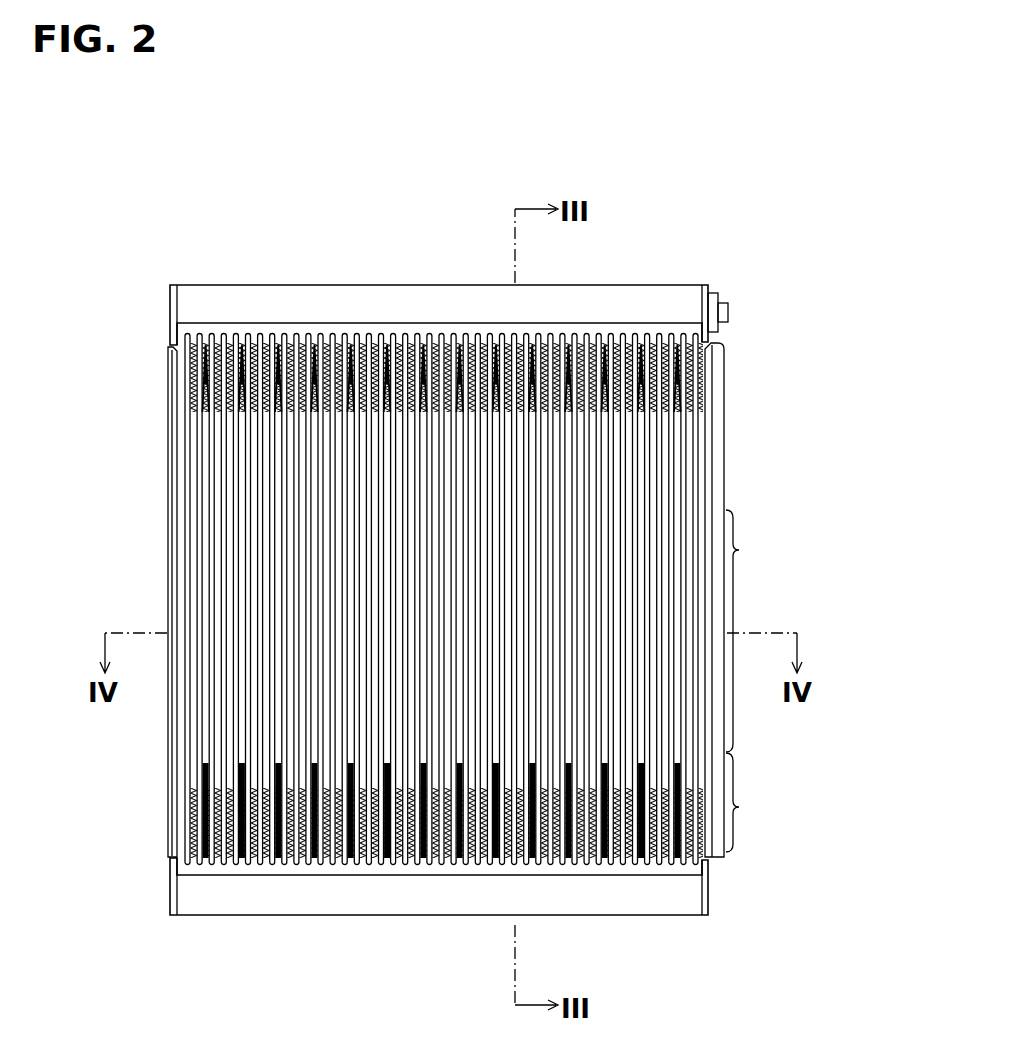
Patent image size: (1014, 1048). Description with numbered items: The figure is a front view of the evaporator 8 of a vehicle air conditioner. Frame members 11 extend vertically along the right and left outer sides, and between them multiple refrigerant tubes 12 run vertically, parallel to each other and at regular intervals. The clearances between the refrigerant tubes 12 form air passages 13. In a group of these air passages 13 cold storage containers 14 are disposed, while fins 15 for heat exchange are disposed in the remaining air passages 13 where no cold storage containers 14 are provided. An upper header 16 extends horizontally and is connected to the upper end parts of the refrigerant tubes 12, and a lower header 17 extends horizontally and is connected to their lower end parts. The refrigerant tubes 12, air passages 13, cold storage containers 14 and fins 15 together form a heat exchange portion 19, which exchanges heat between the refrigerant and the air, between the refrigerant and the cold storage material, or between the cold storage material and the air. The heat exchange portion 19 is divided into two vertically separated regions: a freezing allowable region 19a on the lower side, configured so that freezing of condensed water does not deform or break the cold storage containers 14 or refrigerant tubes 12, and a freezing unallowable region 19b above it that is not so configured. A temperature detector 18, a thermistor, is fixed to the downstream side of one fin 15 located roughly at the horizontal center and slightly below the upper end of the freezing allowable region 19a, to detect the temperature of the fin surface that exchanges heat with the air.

The evaporator 8 is at (650, 276).
The frame member 11 is at (173, 455).
The refrigerant tube 12 is at (188, 495).
The air passage 13 is at (195, 540).
The cold storage container 14 is at (207, 588).
The fin 15 is at (192, 386).
The upper header 16 is at (292, 302).
The lower header 17 is at (259, 897).
The temperature detector 18 is at (444, 775).
The heat exchange portion 19 is at (614, 539).
The freezing allowable region 19a is at (757, 802).
The freezing unallowable region 19b is at (757, 631).